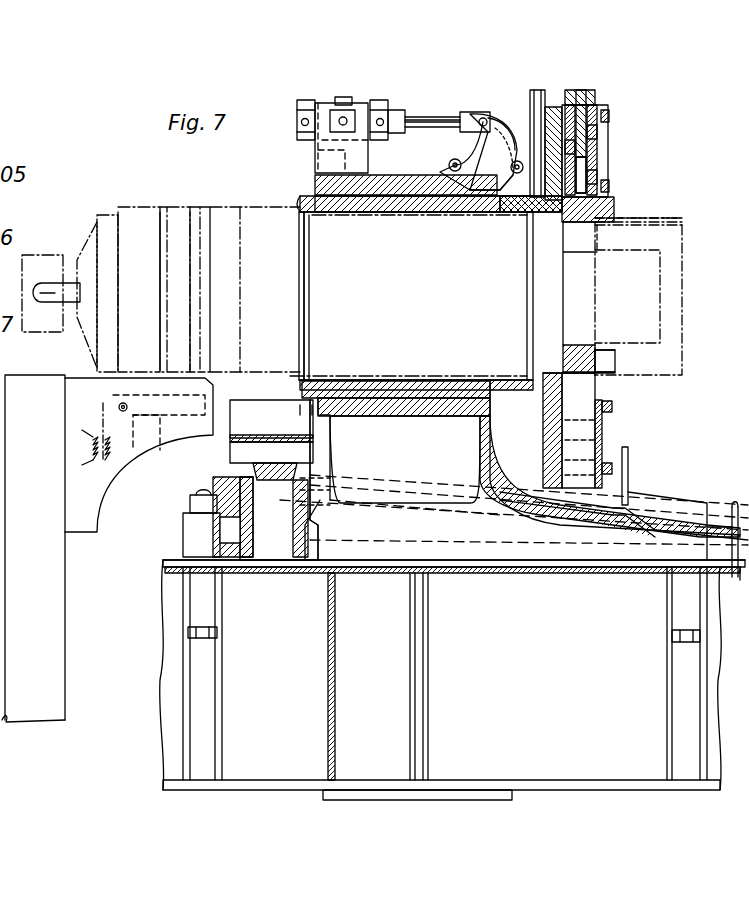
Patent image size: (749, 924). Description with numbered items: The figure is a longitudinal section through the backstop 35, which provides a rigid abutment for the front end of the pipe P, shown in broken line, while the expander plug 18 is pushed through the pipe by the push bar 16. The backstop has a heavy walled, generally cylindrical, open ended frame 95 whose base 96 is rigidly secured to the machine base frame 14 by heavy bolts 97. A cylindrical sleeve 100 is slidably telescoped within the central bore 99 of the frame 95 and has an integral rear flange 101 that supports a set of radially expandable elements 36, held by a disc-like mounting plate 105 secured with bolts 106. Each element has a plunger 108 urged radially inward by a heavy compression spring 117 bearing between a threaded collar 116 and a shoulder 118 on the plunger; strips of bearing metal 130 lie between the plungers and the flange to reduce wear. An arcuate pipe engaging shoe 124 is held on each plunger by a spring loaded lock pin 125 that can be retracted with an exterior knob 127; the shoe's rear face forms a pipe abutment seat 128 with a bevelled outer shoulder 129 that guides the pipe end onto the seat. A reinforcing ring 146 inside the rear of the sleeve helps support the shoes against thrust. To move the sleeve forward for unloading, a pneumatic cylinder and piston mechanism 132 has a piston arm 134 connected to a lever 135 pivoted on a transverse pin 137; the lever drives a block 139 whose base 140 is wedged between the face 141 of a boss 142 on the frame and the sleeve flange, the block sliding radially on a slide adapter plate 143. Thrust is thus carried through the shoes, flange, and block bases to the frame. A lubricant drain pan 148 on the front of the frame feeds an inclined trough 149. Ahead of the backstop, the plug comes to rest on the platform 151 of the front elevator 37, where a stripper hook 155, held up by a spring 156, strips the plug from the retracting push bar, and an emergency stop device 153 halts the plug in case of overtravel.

The base frame 14 is at (545, 667).
The push bar 16 is at (672, 272).
The expander plug 18 is at (125, 215).
The backstop 35 is at (416, 96).
The radially expandable elements 36 is at (606, 98).
The front elevator 37 is at (70, 573).
The backstop frame 95 is at (425, 410).
The base 96 is at (232, 500).
The heavy bolts 97 is at (210, 595).
The central bore 99 is at (328, 208).
The cylindrical sleeve 100 is at (397, 208).
The rear flange 101 is at (556, 436).
The mounting plate 105 is at (600, 148).
The bolts 106 is at (610, 116).
The plunger 108 is at (600, 180).
The collar 116 is at (594, 100).
The compression spring 117 is at (600, 134).
The shoulder 118 is at (602, 165).
The pipe engaging shoe 124 is at (576, 352).
The lock pin 125 is at (584, 283).
The knob 127 is at (583, 100).
The pipe abutment seat 128 is at (600, 224).
The bevelled outer shoulder 129 is at (615, 210).
The bearing metal strips 130 is at (557, 105).
The cylinder and piston mechanism 132 is at (343, 100).
The piston arm 134 is at (432, 117).
The lever 135 is at (498, 110).
The transverse pin 137 is at (449, 165).
The block 139 is at (516, 150).
The block base 140 is at (530, 210).
The boss face 141 is at (508, 200).
The boss 142 is at (490, 195).
The slide adapter plate 143 is at (547, 108).
The reinforcing ring 146 is at (532, 318).
The lubricant drain pan 148 is at (238, 422).
The inclined trough 149 is at (362, 478).
The platform 151 is at (96, 488).
The emergency stop device 153 is at (42, 255).
The stripper hook 155 is at (160, 450).
The spring 156 is at (139, 423).
The pipe P is at (678, 220).